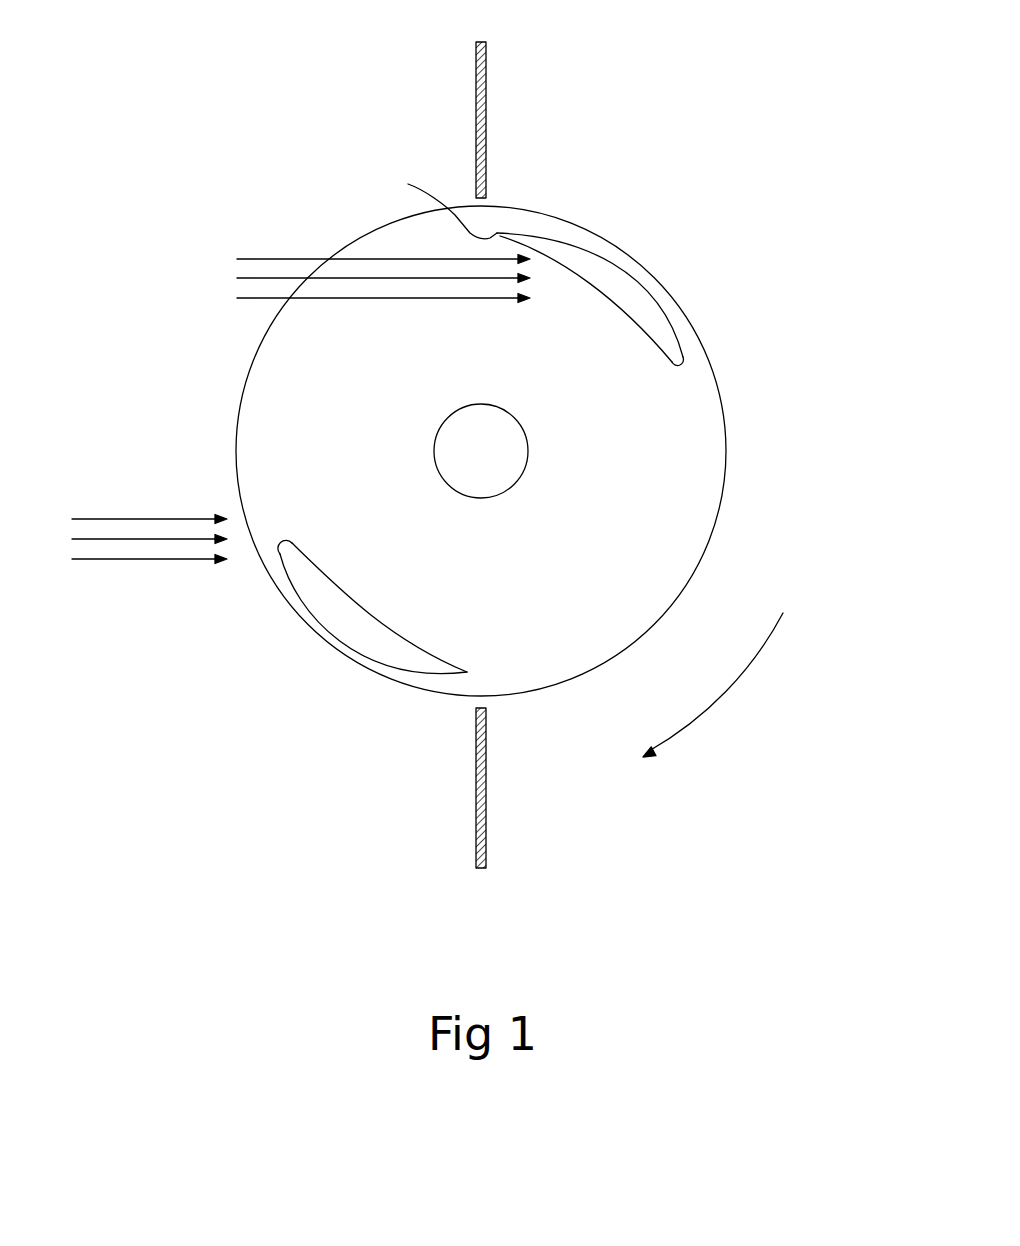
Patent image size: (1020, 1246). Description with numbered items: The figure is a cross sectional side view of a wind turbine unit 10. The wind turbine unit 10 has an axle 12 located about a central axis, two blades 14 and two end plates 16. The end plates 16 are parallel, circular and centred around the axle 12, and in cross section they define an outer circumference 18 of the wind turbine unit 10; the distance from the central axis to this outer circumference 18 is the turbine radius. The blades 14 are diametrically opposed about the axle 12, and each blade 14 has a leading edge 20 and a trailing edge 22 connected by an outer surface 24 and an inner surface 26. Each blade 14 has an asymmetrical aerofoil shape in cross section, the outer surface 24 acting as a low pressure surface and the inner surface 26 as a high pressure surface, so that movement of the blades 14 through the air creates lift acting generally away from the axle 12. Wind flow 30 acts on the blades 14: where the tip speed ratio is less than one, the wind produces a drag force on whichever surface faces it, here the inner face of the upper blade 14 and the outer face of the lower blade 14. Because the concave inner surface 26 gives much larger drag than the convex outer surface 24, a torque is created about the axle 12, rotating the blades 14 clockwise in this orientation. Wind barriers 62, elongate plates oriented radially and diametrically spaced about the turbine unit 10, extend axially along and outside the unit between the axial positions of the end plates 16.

The wind turbine unit 10 is at (763, 458).
The axle 12 is at (515, 482).
The blade 14 is at (468, 445).
The end plate 16 is at (695, 397).
The outer circumference 18 is at (275, 588).
The leading edge 20 is at (672, 368).
The trailing edge 22 is at (437, 204).
The outer surface 24 is at (602, 262).
The inner surface 26 is at (580, 276).
The wind flow 30 is at (280, 409).
The wind barrier 62 is at (485, 108).